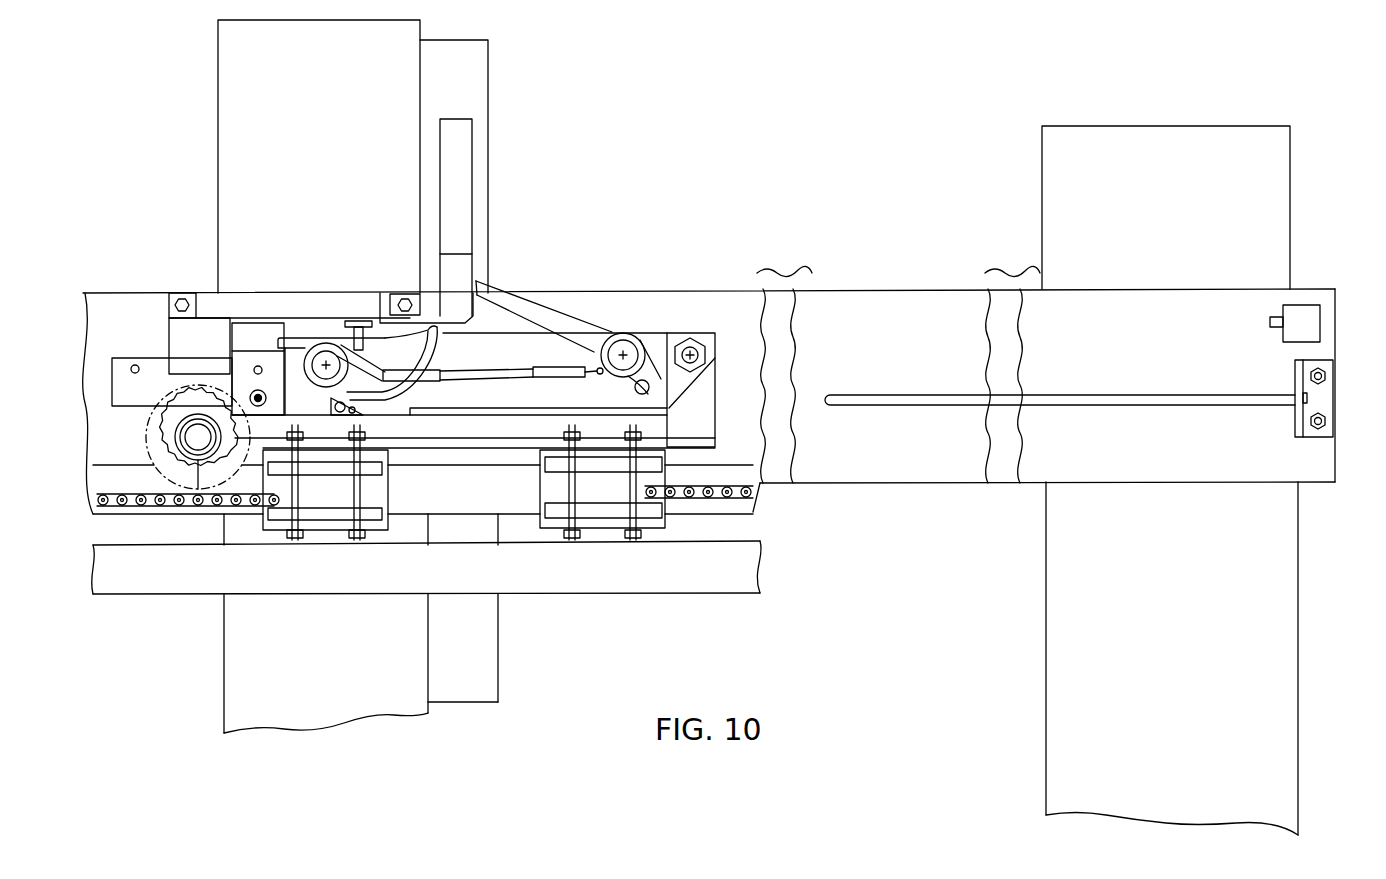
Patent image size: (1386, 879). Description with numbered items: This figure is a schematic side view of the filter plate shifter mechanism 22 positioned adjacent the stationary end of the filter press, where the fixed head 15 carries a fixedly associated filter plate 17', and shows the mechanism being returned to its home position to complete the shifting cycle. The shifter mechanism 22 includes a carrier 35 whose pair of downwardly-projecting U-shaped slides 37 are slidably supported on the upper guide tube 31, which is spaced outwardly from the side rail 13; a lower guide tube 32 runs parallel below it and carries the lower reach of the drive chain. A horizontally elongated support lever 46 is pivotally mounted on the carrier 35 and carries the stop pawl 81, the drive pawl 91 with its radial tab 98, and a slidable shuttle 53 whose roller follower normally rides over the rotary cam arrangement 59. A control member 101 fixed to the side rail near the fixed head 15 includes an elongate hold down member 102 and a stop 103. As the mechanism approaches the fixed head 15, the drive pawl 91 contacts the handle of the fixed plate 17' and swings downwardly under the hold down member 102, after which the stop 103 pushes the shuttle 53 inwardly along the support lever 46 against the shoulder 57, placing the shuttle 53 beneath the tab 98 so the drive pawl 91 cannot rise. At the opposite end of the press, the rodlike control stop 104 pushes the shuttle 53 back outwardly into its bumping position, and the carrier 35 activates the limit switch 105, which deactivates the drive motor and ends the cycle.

The side rails 13 is at (693, 308).
The fixed head 15 is at (232, 113).
The fixed filter plate 17' is at (476, 371).
The shifter mechanism 22 is at (714, 318).
The guide tube 31 is at (748, 507).
The lower guide tube 32 is at (747, 583).
The carrier 35 is at (443, 428).
The U-shaped slides 37 is at (323, 517).
The support lever 46 is at (537, 317).
The shuttle 53 is at (193, 330).
The shoulder 57 is at (262, 352).
The rotary cam arrangement 59 is at (130, 440).
The stop pawl 81 is at (578, 318).
The drive pawl 91 is at (385, 330).
The radial tab 98 is at (293, 342).
The control member 101 is at (282, 308).
The hold down member 102 is at (240, 318).
The stop 103 is at (190, 296).
The control stop 104 is at (907, 401).
The limit switch 105 is at (1303, 317).